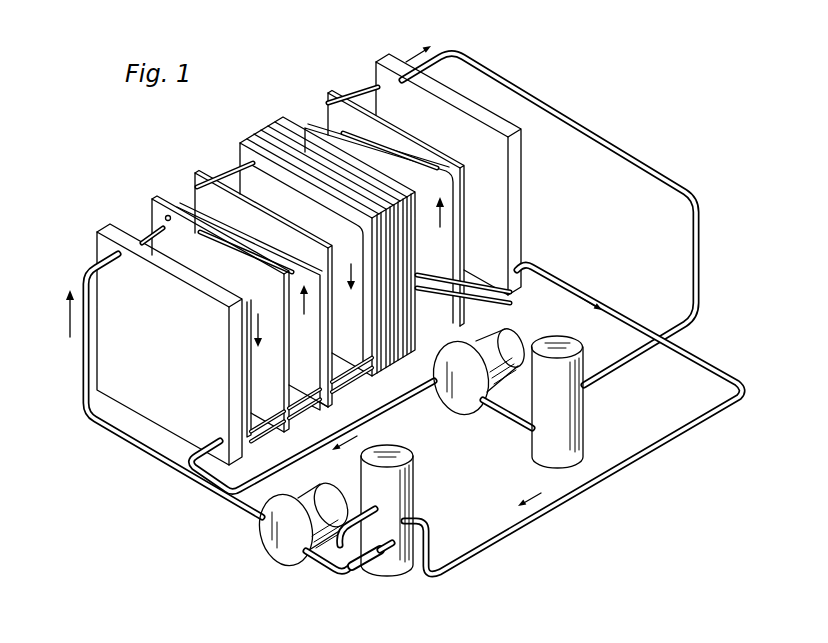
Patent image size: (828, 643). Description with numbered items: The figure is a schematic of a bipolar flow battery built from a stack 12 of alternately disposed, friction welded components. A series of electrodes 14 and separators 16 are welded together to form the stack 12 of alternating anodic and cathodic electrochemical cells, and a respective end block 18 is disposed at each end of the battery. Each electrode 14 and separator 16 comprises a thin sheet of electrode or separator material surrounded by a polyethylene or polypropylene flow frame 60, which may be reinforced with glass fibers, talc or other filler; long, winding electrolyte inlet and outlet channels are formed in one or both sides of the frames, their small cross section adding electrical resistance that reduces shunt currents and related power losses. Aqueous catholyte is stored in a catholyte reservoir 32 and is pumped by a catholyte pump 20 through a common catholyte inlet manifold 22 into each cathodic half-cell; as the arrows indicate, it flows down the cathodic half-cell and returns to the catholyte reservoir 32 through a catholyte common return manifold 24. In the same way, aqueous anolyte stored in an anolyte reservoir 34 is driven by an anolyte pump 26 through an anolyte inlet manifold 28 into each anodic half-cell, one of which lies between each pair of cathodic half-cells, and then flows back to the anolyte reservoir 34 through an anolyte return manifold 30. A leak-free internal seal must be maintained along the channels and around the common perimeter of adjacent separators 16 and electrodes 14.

The stack 12 is at (259, 142).
The electrode 14 is at (328, 96).
The separator 16 is at (152, 202).
The end block 18 is at (384, 63).
The catholyte pump 20 is at (262, 536).
The common catholyte inlet manifold 22 is at (117, 438).
The catholyte common return manifold 24 is at (609, 300).
The anolyte pump 26 is at (511, 341).
The anolyte inlet manifold 28 is at (414, 390).
The anolyte return manifold 30 is at (698, 226).
The catholyte reservoir 32 is at (410, 468).
The anolyte reservoir 34 is at (560, 418).
The flow frame 60 is at (405, 142).